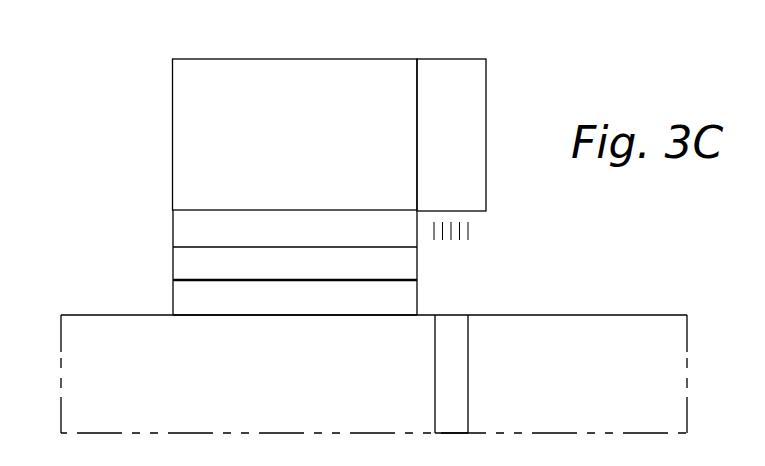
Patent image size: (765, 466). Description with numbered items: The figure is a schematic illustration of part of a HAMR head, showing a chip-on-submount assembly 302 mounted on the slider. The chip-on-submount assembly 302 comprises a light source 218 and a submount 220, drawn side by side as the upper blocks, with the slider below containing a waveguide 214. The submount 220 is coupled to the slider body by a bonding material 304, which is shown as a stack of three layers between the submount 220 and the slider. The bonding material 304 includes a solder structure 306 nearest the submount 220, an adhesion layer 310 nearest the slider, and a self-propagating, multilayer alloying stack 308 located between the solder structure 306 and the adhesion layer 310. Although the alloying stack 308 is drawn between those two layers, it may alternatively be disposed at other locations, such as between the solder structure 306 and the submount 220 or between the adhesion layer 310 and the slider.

The chip-on-submount assembly 302 is at (123, 77).
The submount 220 is at (289, 65).
The light source 218 is at (448, 65).
The bonding material 304 is at (229, 262).
The solder structure 306 is at (178, 229).
The self-propagating, multilayer alloying stack 308 is at (178, 264).
The adhesion layer 310 is at (264, 301).
The waveguide 214 is at (458, 371).